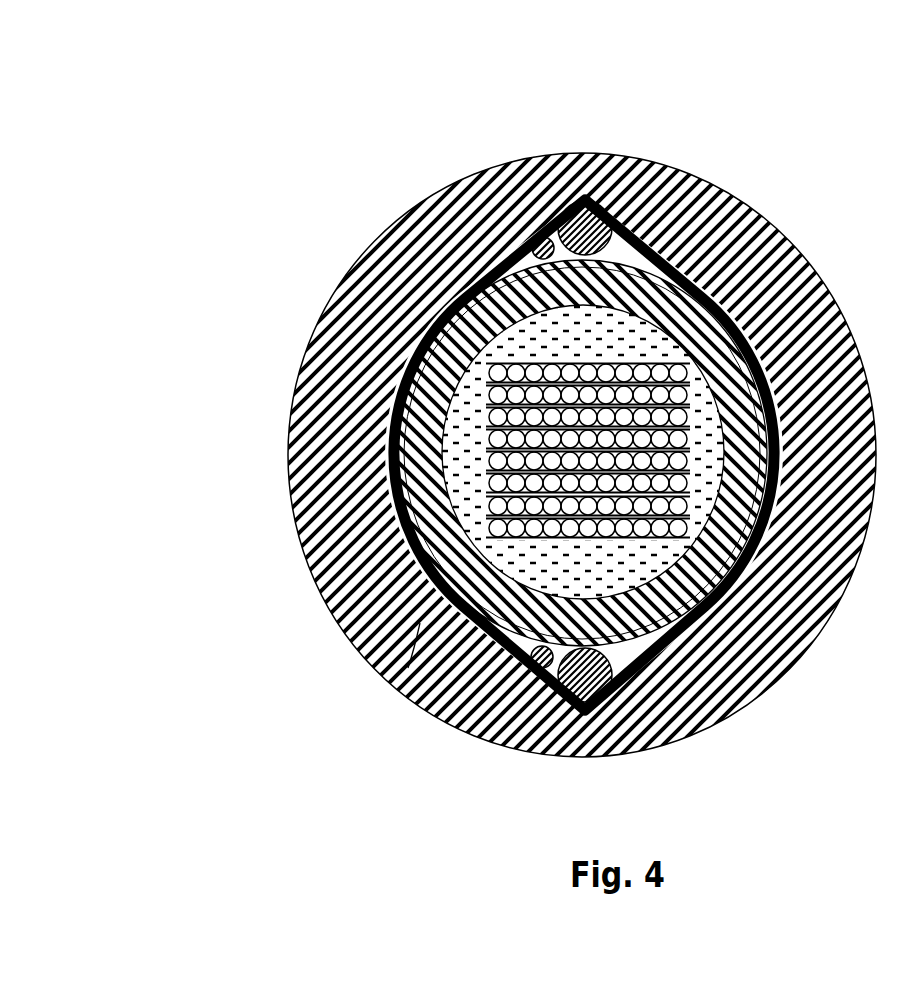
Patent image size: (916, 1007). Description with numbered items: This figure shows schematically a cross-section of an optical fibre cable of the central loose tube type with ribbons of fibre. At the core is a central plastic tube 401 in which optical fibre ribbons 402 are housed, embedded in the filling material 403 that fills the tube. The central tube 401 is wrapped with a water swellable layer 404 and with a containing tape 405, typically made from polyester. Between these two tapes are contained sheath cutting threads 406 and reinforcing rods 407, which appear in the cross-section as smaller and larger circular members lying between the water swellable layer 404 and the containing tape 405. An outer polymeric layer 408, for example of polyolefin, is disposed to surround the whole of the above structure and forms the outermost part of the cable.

The central plastic tube 401 is at (690, 206).
The optical fibre ribbons 402 is at (517, 505).
The filling material 403 is at (408, 668).
The water swellable layer 404 is at (440, 495).
The containing tape 405 is at (423, 320).
The sheath cutting threads 406 is at (540, 235).
The reinforcing rods 407 is at (585, 195).
The outer polymeric layer 408 is at (450, 383).